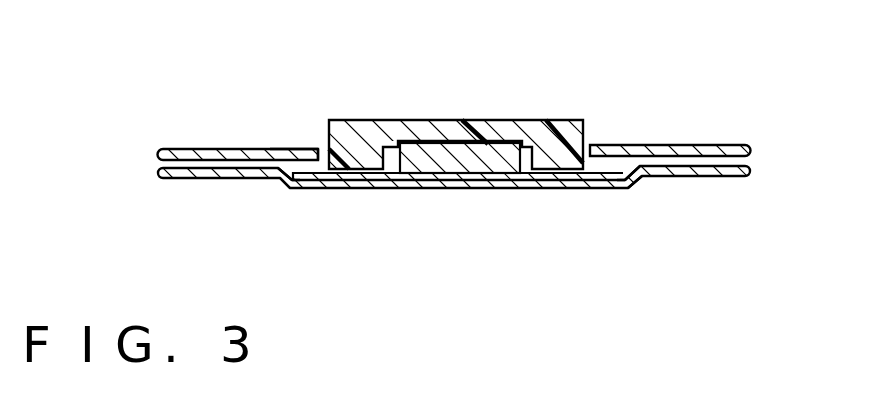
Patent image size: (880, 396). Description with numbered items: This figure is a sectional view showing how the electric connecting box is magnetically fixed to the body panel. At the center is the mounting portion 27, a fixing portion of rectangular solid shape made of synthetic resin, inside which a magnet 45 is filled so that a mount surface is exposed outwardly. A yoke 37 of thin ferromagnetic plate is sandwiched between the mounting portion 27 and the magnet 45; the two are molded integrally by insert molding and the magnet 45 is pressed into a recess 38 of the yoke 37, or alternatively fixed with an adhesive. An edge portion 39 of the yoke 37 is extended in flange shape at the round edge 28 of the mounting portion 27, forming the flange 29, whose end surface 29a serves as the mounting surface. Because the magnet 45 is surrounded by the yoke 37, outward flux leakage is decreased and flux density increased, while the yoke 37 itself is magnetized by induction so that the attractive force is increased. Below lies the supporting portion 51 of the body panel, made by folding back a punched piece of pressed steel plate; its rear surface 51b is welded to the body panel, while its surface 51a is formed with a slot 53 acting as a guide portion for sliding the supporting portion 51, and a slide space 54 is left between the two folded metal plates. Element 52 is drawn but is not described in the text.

The mounting portion 27 is at (455, 120).
The round edge 28 is at (590, 124).
The flange 29 is at (332, 189).
The end surface 29a is at (307, 189).
The yoke 37 is at (497, 120).
The recess 38 is at (424, 146).
The edge portion 39 is at (383, 189).
The magnet 45 is at (455, 168).
The supporting portion 51 is at (450, 156).
The surface 51a is at (210, 150).
The rear surface 51b is at (227, 179).
The lead 52 is at (691, 145).
The slot 53 is at (322, 150).
The slide space 54 is at (280, 150).